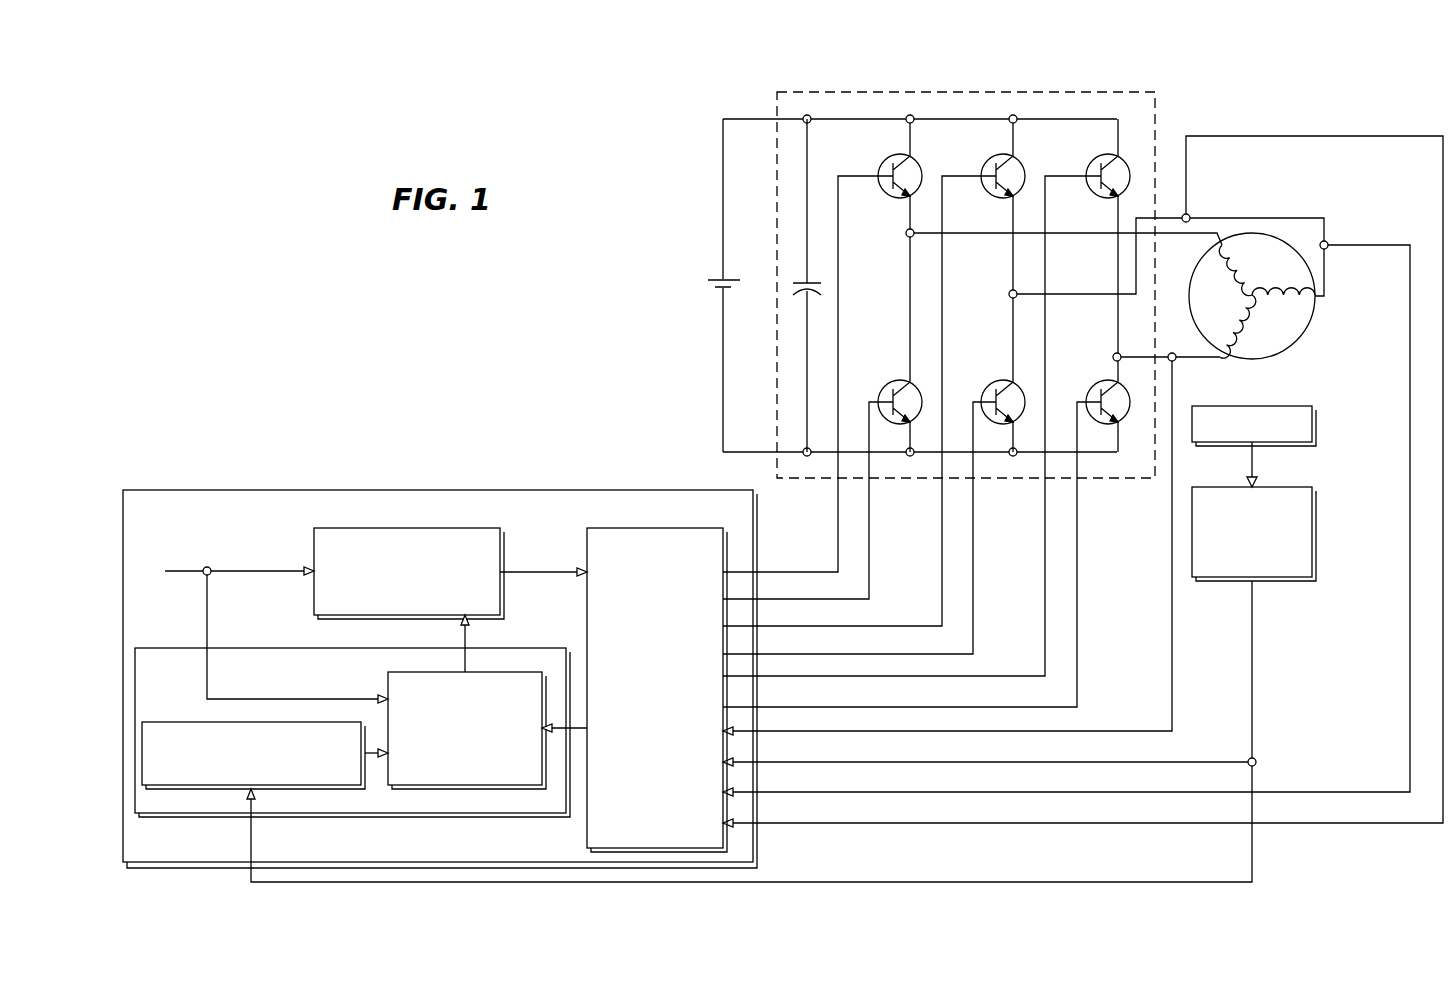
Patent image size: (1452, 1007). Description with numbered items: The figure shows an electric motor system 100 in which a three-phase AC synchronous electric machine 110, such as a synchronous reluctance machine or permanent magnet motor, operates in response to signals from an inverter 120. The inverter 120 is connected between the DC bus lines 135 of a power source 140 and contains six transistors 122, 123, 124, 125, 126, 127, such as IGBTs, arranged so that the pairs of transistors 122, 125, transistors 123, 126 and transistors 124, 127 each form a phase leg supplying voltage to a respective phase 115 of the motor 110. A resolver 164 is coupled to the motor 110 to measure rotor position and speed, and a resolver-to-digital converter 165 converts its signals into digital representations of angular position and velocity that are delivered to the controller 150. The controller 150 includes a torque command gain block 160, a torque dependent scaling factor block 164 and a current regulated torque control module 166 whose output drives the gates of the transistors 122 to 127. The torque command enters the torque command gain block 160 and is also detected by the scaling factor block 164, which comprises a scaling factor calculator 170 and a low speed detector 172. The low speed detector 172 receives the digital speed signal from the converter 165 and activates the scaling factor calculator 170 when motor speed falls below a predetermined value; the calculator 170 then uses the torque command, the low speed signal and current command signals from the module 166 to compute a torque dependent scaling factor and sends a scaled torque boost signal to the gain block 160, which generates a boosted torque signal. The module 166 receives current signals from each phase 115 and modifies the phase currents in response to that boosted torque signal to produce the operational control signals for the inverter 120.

The electric motor system 100 is at (1229, 101).
The AC synchronous electric machine 110 is at (1316, 312).
The phase 115 is at (1236, 262).
The inverter 120 is at (1110, 92).
The transistor 122 is at (882, 186).
The transistor 123 is at (986, 186).
The transistor 124 is at (1089, 186).
The transistor 125 is at (882, 390).
The transistor 126 is at (986, 390).
The transistor 127 is at (1089, 390).
The DC bus lines 135 is at (740, 118).
The power source 140 is at (716, 280).
The controller 150 is at (196, 490).
The torque command gain block 160 is at (392, 609).
The resolver 164 is at (1315, 423).
The resolver-to-digital converter 165 is at (1315, 505).
The current regulated torque control module 166 is at (640, 827).
The scaling factor calculator 170 is at (450, 777).
The low speed detector 172 is at (237, 777).